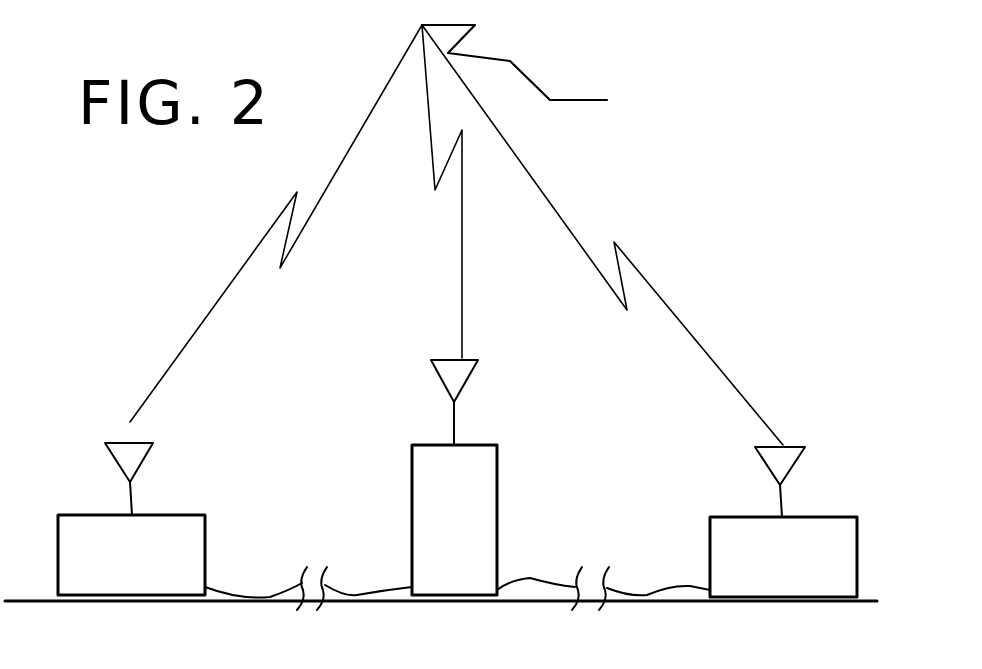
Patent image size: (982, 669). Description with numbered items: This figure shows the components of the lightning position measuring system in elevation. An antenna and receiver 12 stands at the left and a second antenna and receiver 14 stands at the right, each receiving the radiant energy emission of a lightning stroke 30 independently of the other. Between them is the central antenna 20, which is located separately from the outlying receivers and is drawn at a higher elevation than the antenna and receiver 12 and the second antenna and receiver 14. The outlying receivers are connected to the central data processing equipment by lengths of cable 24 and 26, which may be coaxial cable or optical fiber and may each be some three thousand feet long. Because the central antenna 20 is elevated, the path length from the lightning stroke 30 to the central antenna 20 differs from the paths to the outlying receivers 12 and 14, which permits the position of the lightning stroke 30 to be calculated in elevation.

The antenna and receiver 12 is at (107, 533).
The second antenna and receiver 14 is at (788, 457).
The central antenna 20 is at (450, 375).
The cable 24 is at (308, 570).
The cable 26 is at (603, 570).
The lightning stroke 30 is at (542, 88).